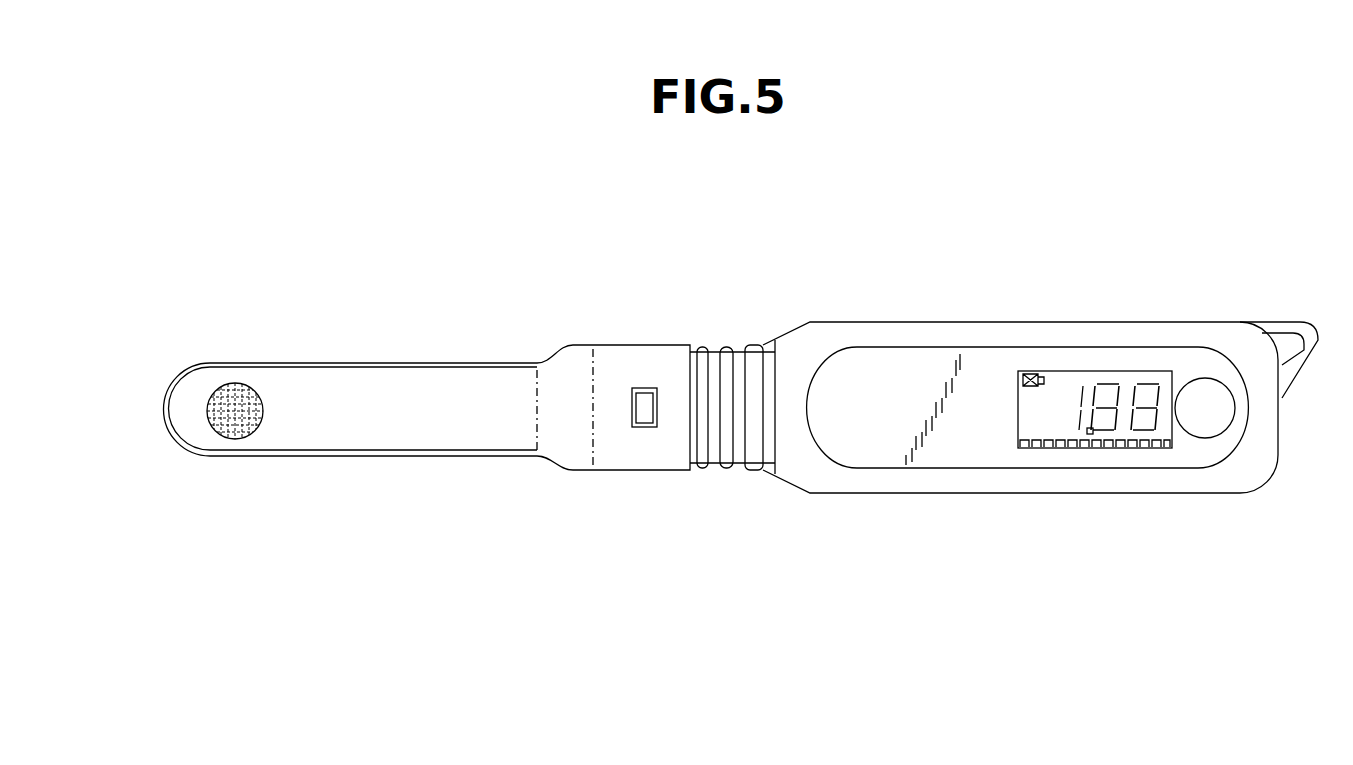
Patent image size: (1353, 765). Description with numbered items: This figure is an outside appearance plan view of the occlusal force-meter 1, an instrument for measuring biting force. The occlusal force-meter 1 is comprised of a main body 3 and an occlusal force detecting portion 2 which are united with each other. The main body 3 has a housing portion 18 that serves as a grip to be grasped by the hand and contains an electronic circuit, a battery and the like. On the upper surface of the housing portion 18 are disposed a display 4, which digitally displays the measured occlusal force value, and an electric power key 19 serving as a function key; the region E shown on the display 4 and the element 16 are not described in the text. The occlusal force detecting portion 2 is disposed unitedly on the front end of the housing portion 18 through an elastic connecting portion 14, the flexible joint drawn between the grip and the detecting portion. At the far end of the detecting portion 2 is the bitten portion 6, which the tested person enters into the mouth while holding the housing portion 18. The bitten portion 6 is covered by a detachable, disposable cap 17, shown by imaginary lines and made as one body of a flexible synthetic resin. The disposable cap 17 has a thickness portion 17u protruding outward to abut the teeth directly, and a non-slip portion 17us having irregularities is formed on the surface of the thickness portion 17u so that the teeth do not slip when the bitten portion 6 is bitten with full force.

The occlusal force-meter 1 is at (1052, 228).
The occlusal force detecting portion 2 is at (504, 358).
The main body 3 is at (1072, 320).
The display 4 is at (1148, 370).
The bitten portion 6 is at (222, 472).
The elastic connecting portion 14 is at (723, 480).
The probe sheath 16 is at (376, 363).
The disposable cap 17 is at (400, 458).
The thickness portion 17u is at (262, 420).
The non-slip portion 17us is at (240, 390).
The housing portion 18 is at (865, 322).
The electric power key 19 is at (1207, 437).
The display area E is at (1043, 408).